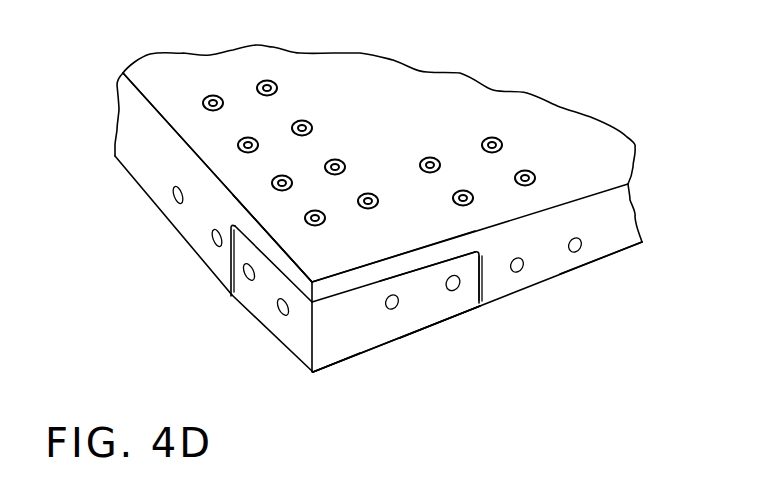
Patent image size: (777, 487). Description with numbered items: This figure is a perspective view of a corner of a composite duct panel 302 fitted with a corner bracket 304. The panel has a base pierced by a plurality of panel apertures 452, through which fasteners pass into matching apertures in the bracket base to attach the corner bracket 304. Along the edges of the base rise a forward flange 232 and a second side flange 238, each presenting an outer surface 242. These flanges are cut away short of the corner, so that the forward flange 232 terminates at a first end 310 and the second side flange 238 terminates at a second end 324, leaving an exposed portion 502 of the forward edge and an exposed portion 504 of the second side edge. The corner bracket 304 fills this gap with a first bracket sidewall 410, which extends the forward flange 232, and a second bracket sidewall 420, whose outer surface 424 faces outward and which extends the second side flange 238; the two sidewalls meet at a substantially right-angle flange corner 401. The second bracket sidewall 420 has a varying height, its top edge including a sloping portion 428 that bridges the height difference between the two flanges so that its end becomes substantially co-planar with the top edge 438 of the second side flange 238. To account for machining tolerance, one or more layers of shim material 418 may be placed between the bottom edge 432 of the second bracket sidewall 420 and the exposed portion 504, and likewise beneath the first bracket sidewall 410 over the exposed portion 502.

The composite duct panel 302 is at (412, 92).
The panel apertures 452 is at (226, 108).
The outer surface 242 is at (162, 136).
The forward flange 232 is at (182, 240).
The second side flange 238 is at (558, 278).
The top edge of second side flange 438 is at (622, 255).
The sloping portion 428 is at (420, 333).
The exposed portion of forward edge 502 is at (257, 230).
The exposed portion of second side edge 504 is at (390, 270).
The flange corner 401 is at (305, 379).
The first end of forward flange 310 is at (230, 292).
The first bracket sidewall 410 is at (290, 300).
The second bracket sidewall 420 is at (364, 330).
The bottom edge of second bracket sidewall 432 is at (446, 242).
The shim material 418 is at (483, 287).
The second end of second side flange 324 is at (480, 285).
The outer surface of second bracket sidewall 424 is at (393, 340).
The corner bracket 304 is at (325, 373).